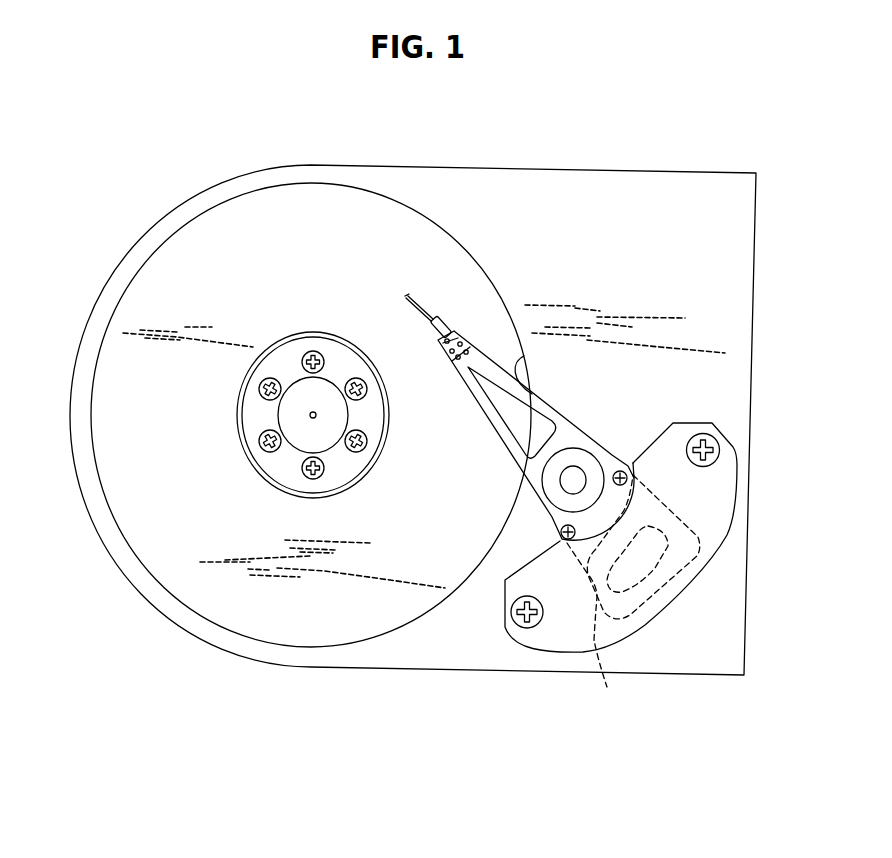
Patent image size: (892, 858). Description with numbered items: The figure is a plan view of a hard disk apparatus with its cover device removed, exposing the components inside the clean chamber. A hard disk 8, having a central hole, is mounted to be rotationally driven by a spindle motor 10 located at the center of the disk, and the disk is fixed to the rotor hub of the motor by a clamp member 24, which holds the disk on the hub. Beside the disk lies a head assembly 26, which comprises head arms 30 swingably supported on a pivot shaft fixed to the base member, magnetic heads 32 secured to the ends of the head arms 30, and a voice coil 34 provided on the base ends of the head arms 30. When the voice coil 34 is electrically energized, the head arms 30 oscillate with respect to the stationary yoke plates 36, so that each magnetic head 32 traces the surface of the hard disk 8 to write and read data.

The hard disk 8 is at (123, 485).
The spindle motor 10 is at (255, 345).
The clamp member 24 is at (290, 470).
The head assembly 26 is at (616, 435).
The head arm 30 is at (600, 429).
The magnetic head 32 is at (413, 298).
The voice coil 34 is at (633, 594).
The stationary yoke plate 36 is at (710, 480).